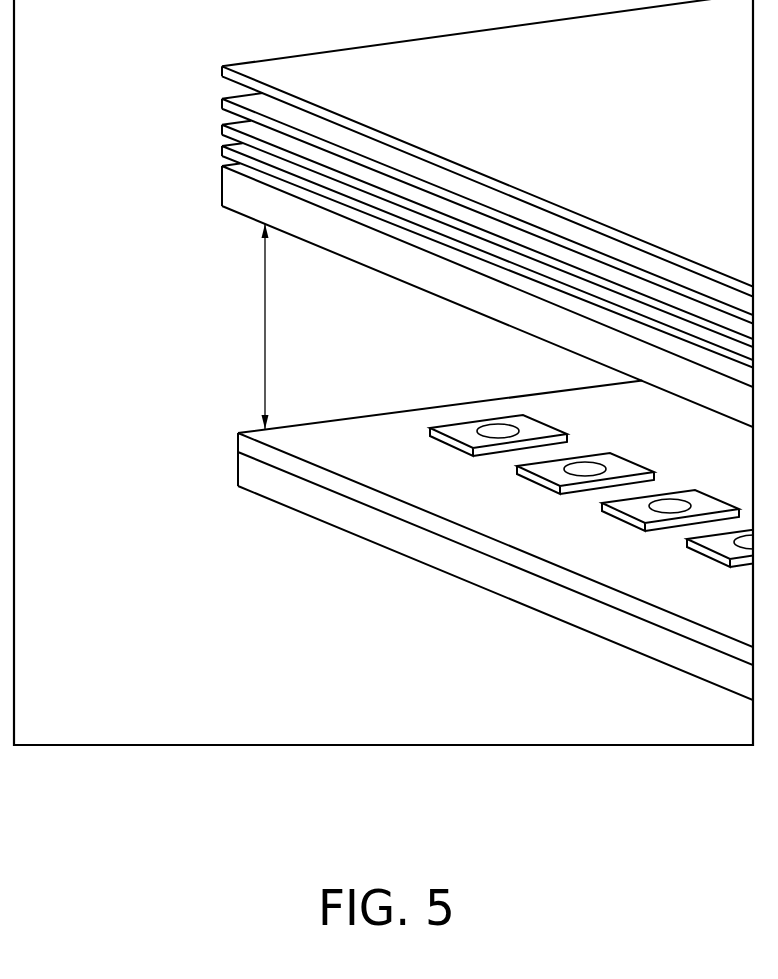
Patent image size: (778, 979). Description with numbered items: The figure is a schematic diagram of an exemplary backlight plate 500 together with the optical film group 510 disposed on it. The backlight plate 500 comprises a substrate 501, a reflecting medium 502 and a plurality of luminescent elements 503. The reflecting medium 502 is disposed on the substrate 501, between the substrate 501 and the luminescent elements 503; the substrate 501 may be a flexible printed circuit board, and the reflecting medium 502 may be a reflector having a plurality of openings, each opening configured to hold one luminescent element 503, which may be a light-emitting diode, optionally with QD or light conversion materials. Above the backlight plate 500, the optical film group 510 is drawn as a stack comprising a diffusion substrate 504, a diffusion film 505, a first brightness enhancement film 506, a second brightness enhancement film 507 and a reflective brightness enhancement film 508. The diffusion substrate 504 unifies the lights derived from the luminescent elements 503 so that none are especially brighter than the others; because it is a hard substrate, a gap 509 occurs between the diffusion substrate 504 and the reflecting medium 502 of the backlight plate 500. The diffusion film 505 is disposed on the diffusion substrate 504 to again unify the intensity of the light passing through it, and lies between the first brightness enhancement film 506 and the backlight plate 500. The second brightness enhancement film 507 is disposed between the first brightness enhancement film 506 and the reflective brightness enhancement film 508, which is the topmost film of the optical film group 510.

The backlight plate 500 is at (418, 540).
The substrate 501 is at (239, 469).
The reflecting medium 502 is at (239, 443).
The luminescent elements 503 is at (456, 436).
The diffusion substrate 504 is at (434, 296).
The diffusion film 505 is at (223, 153).
The first brightness enhancement film 506 is at (223, 128).
The second brightness enhancement film 507 is at (223, 101).
The reflective brightness enhancement film 508 is at (223, 70).
The gap 509 is at (241, 326).
The optical film group 510 is at (399, 213).